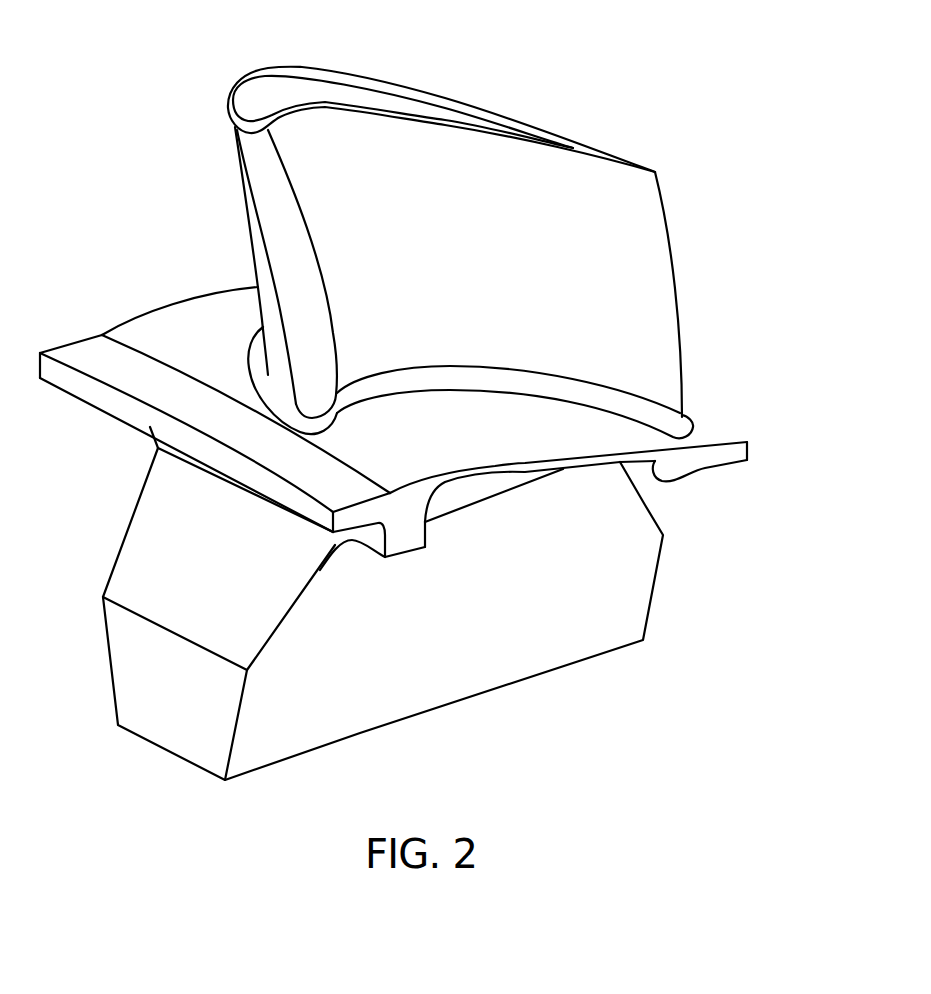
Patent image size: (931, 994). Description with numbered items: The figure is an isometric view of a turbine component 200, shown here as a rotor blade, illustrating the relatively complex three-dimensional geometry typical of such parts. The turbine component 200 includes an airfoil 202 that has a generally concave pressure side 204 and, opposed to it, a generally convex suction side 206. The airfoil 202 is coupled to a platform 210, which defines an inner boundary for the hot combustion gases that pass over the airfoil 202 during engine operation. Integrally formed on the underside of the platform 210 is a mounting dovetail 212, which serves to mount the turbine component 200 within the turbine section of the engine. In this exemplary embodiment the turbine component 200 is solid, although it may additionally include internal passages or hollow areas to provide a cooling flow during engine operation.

The turbine component 200 is at (733, 533).
The airfoil 202 is at (733, 265).
The pressure side 204 is at (490, 286).
The suction side 206 is at (299, 68).
The platform 210 is at (166, 321).
The mounting dovetail 212 is at (125, 687).